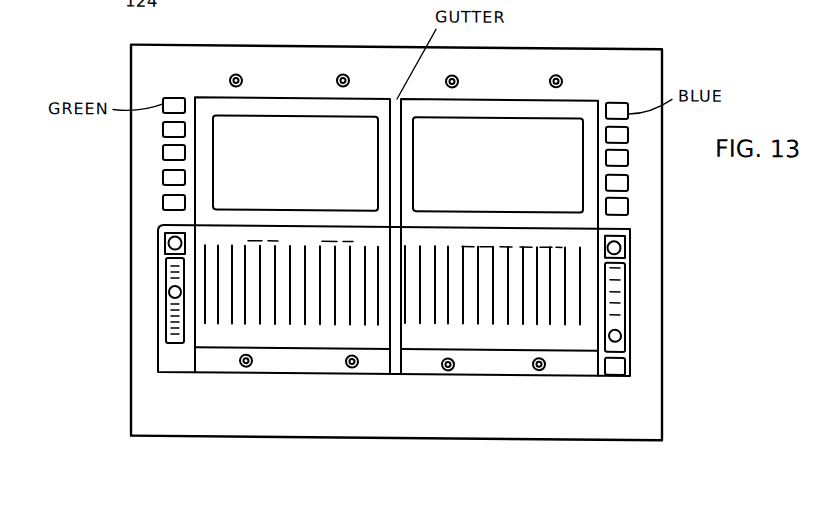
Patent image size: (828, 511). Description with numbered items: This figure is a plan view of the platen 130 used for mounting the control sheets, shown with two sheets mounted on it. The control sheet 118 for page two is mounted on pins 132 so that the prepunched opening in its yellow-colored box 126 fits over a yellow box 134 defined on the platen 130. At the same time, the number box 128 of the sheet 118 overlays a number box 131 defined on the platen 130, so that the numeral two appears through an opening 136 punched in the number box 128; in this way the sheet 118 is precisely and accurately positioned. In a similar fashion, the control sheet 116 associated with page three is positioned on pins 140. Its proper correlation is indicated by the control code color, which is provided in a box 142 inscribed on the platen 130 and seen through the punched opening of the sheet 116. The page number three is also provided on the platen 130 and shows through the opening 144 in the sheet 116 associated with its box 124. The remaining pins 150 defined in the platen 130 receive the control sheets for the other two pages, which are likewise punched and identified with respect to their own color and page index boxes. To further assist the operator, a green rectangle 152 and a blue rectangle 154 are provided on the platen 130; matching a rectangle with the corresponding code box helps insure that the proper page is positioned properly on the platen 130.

The platen 130 is at (178, 44).
The pins 150 is at (239, 74).
The green rectangle 152 is at (207, 175).
The blue rectangle 154 is at (412, 165).
The control sheet 116 is at (303, 375).
The control sheet 118 is at (495, 376).
The pins 140 is at (244, 366).
The pins 132 is at (446, 368).
The box 142 is at (158, 232).
The opening 144 is at (167, 293).
The box 124 is at (166, 325).
The yellow box 134 is at (627, 233).
The box 126 is at (621, 243).
The number box 131 is at (625, 296).
The opening 136 is at (622, 333).
The number box 128 is at (625, 349).